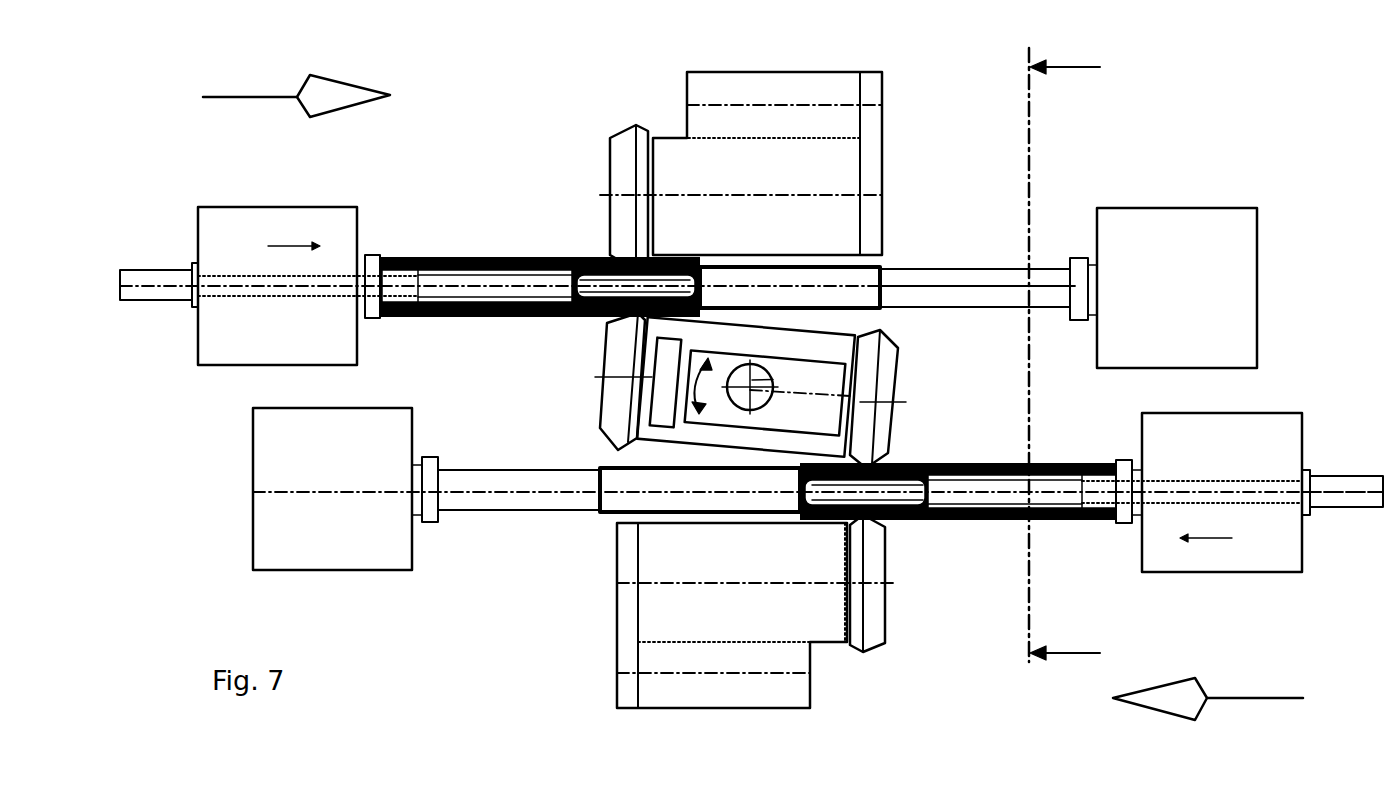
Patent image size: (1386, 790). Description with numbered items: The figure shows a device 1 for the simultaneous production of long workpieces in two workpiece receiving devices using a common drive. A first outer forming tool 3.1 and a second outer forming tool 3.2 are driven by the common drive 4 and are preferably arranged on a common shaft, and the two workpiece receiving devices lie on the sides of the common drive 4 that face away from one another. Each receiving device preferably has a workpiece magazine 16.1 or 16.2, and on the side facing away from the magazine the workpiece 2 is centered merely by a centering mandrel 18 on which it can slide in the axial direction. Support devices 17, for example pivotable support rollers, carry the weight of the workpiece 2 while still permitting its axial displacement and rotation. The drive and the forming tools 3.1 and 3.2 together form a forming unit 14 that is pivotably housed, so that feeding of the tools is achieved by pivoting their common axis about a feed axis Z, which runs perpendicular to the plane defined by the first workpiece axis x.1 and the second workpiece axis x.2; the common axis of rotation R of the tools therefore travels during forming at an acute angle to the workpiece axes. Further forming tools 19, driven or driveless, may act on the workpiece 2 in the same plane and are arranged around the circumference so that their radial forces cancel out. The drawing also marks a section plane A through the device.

The device 1 is at (514, 63).
The workpiece 2 is at (528, 257).
The first outer forming tool 3.1 is at (600, 375).
The second outer forming tool 3.2 is at (892, 445).
The common drive 4 is at (680, 430).
The forming unit 14 is at (830, 337).
The workpiece magazine 16.1 is at (372, 262).
The workpiece magazine 16.2 is at (1125, 523).
The support device 17 is at (626, 132).
The centering mandrel 18 is at (975, 268).
The further forming tool 19 is at (870, 650).
The first workpiece axis x.1 is at (1037, 286).
The second workpiece axis x.2 is at (1347, 490).
The feed axis Z is at (752, 380).
The common axis of rotation R is at (828, 400).
The section line A- A is at (1064, 351).